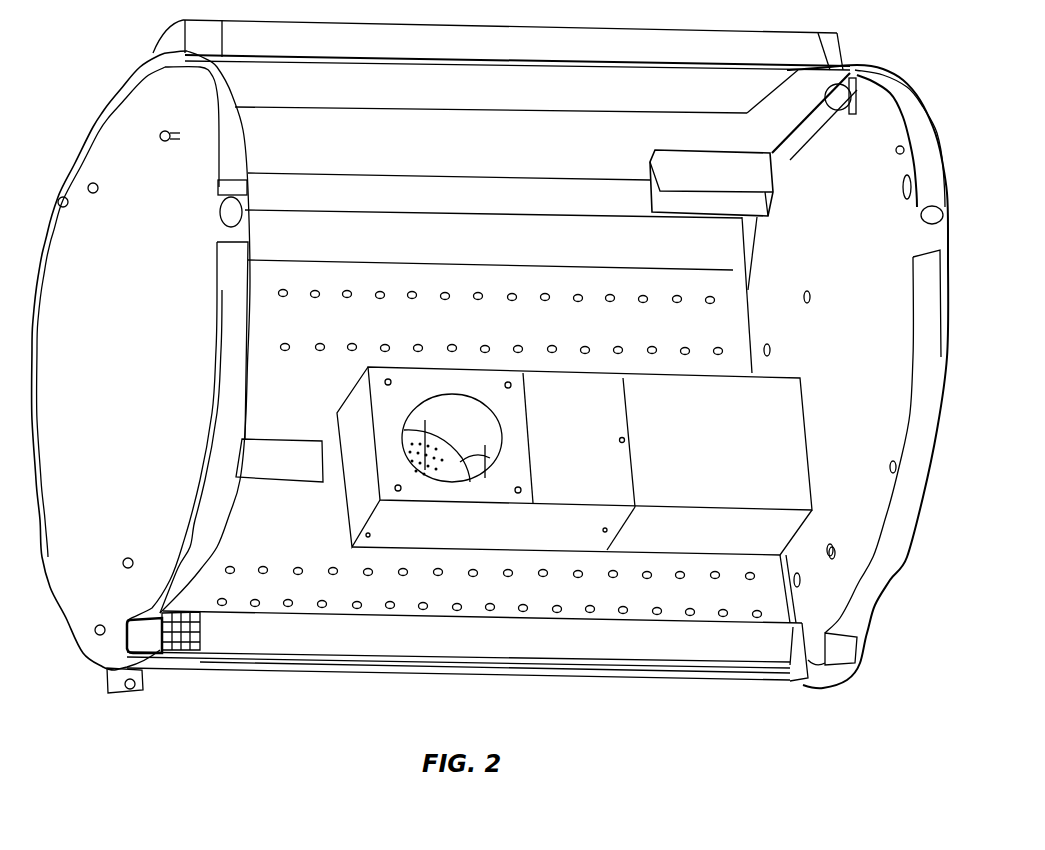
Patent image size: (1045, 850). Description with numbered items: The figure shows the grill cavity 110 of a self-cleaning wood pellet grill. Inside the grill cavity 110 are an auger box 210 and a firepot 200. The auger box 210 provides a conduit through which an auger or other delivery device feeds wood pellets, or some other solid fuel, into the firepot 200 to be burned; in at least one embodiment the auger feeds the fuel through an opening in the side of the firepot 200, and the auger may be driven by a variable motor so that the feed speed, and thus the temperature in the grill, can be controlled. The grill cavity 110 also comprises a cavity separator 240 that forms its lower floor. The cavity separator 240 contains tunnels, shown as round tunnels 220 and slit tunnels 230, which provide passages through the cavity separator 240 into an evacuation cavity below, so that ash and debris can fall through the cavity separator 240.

The grill cavity 110 is at (345, 590).
The firepot 200 is at (428, 421).
The auger box 210 is at (665, 390).
The round tunnels 220 is at (288, 288).
The slit tunnels 230 is at (260, 457).
The cavity separator 240 is at (272, 600).